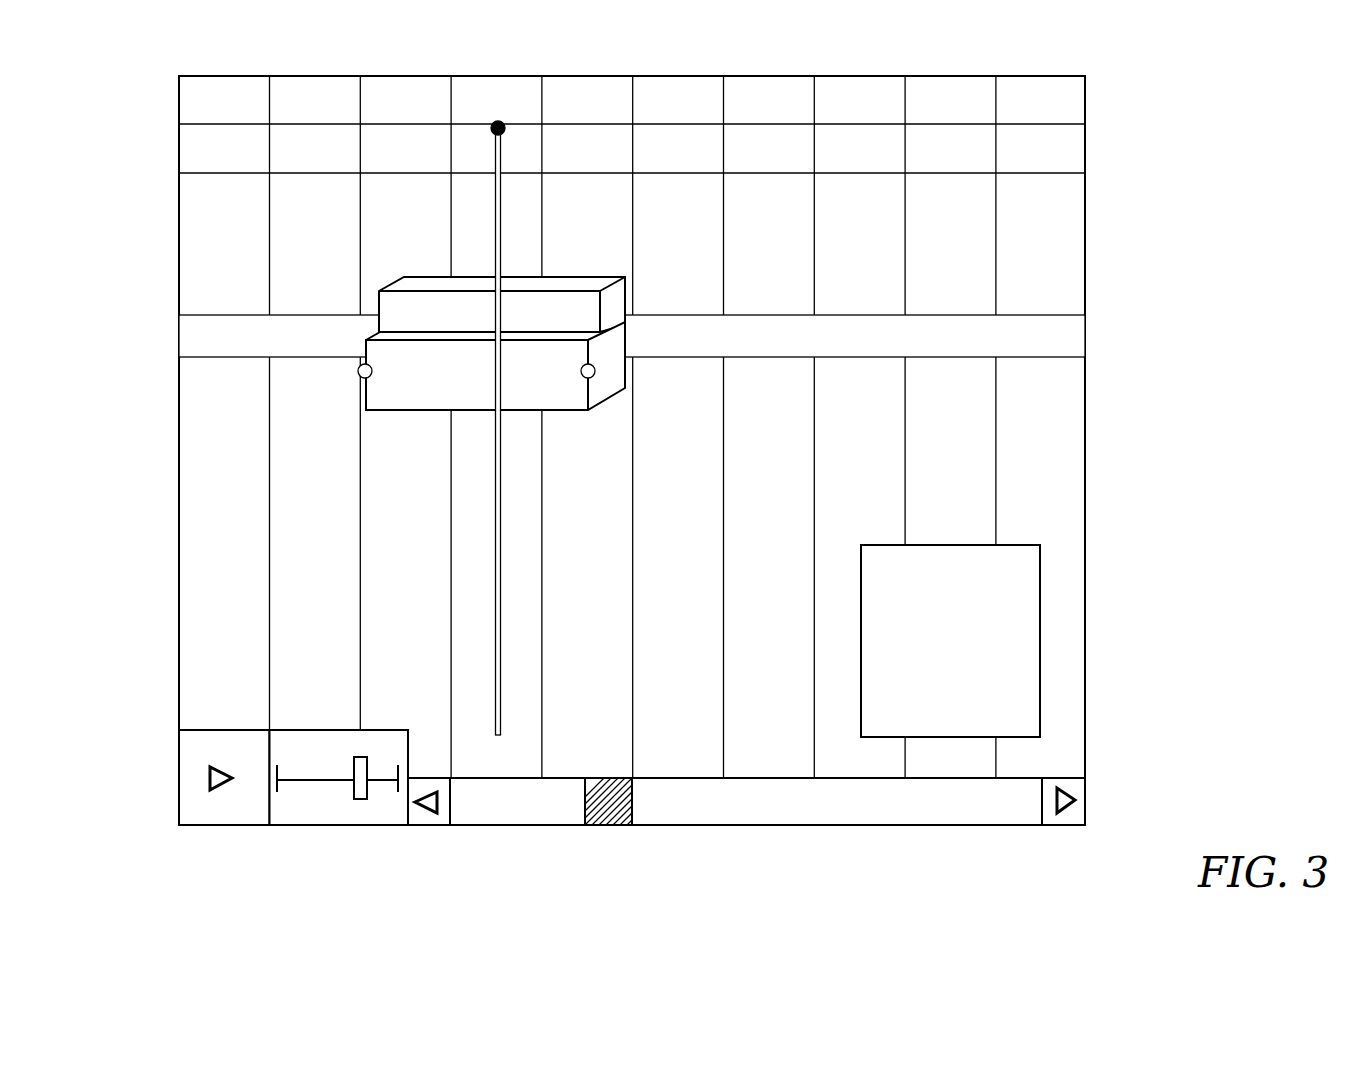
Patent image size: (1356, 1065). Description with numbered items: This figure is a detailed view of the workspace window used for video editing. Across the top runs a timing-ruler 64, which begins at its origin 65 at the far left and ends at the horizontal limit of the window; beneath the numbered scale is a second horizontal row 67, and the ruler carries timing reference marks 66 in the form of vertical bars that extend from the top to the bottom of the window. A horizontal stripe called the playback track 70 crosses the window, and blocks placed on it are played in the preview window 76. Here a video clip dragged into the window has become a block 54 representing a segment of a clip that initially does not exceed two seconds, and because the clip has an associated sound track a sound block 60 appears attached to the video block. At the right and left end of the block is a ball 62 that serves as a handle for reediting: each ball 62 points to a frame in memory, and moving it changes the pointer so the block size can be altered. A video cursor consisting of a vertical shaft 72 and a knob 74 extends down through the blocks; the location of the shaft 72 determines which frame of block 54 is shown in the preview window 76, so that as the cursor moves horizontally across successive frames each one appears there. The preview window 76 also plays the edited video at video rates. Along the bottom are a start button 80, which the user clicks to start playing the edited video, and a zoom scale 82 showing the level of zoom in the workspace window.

The block 54 is at (531, 384).
The sound block 60 is at (532, 297).
The ball 62 is at (503, 392).
The timing-ruler 64 is at (662, 444).
The origin 65 is at (594, 103).
The timing reference marks 66 is at (183, 252).
The second ruler row 67 is at (670, 148).
The playback track 70 is at (632, 313).
The vertical shaft 72 is at (542, 431).
The knob 74 is at (527, 81).
The preview window 76 is at (1006, 641).
The start button 80 is at (224, 798).
The zoom scale 82 is at (339, 796).